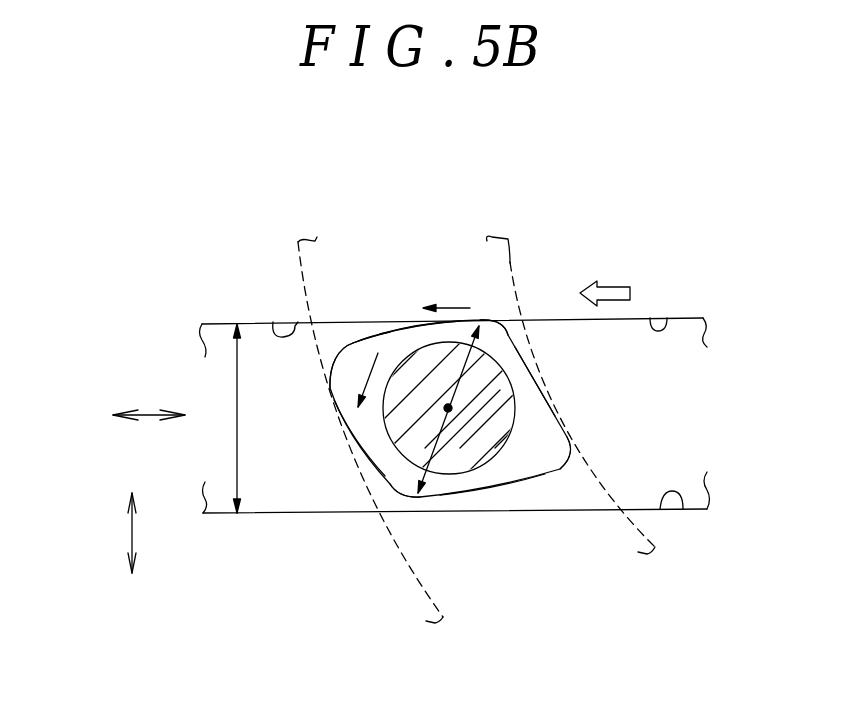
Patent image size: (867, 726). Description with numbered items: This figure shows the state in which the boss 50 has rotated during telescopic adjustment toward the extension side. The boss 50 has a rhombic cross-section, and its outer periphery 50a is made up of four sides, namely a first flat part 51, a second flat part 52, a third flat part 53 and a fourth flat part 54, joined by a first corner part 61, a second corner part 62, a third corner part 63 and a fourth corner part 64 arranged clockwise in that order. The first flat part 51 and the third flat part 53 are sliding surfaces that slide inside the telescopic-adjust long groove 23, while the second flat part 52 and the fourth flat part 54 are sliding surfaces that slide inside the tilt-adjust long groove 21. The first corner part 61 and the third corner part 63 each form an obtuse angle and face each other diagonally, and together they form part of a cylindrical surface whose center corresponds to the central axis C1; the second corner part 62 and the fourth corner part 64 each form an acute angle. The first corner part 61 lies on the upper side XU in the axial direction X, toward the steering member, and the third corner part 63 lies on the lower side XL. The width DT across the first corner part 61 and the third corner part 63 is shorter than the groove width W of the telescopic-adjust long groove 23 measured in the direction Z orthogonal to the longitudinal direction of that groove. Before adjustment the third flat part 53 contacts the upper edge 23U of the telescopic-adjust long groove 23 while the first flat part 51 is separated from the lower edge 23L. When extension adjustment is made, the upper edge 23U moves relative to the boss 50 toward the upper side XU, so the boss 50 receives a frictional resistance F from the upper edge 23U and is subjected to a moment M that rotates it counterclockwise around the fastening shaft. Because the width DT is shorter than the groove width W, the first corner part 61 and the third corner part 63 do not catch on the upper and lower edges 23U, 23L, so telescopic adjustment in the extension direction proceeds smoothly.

The tilt-adjust long groove 21 is at (505, 266).
The telescopic-adjust long groove 23 is at (273, 324).
The upper edge 23U is at (667, 318).
The lower edge 23L is at (683, 509).
The boss 50 is at (549, 397).
The outer periphery 50a is at (397, 330).
The first flat part 51 is at (528, 478).
The second flat part 52 is at (378, 462).
The third flat part 53 is at (363, 341).
The fourth flat part 54 is at (520, 358).
The first corner part 61 is at (392, 485).
The second corner part 62 is at (332, 362).
The third corner part 63 is at (520, 307).
The fourth corner part 64 is at (583, 458).
The frictional resistance F is at (457, 306).
The moment M is at (363, 382).
The width across the first corner part and the third corner part DT is at (440, 427).
The central axis C1 is at (450, 412).
The groove width W is at (235, 377).
The axial direction X is at (150, 417).
The upper side XU is at (96, 416).
The lower side XL is at (202, 416).
The direction orthogonal to the longitudinal direction of the telescopic-adjust long Z is at (133, 532).